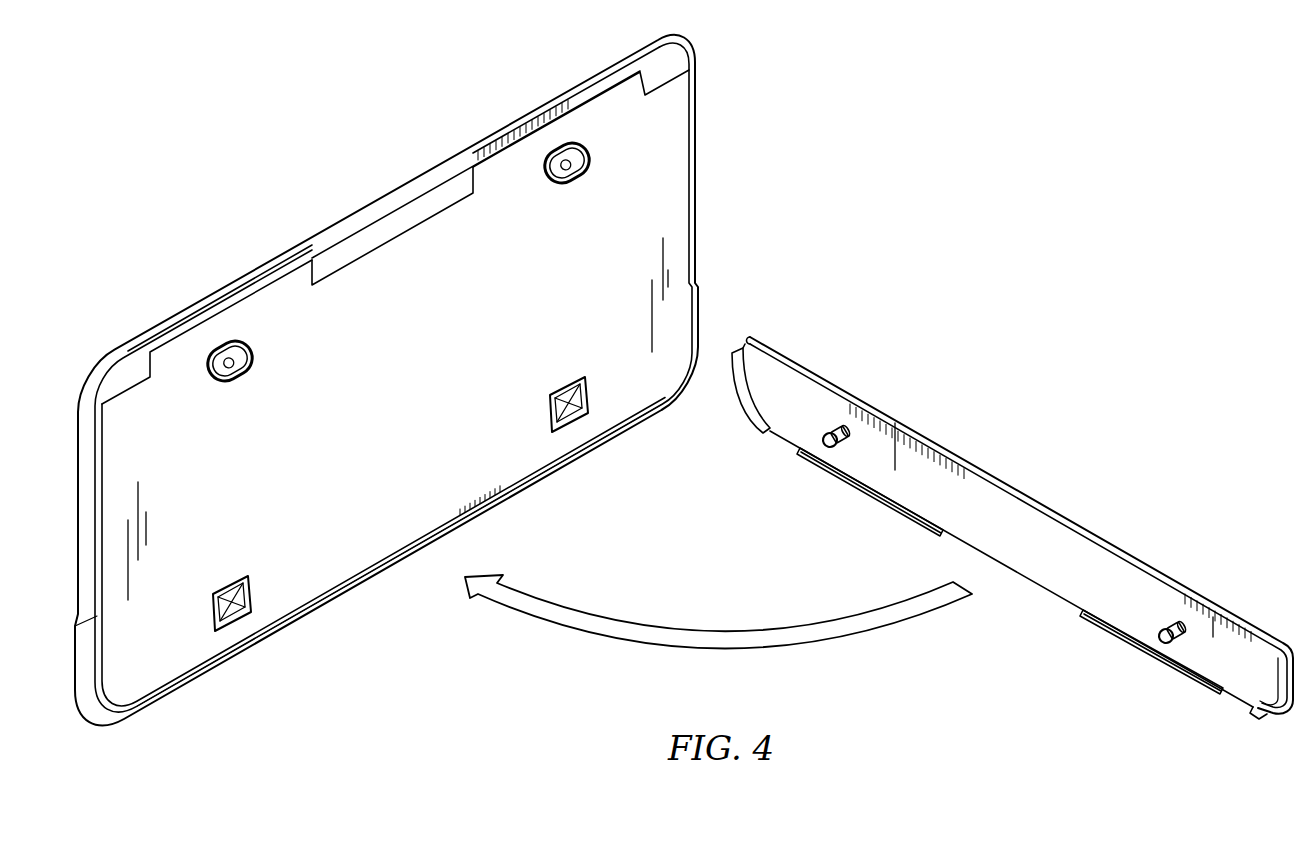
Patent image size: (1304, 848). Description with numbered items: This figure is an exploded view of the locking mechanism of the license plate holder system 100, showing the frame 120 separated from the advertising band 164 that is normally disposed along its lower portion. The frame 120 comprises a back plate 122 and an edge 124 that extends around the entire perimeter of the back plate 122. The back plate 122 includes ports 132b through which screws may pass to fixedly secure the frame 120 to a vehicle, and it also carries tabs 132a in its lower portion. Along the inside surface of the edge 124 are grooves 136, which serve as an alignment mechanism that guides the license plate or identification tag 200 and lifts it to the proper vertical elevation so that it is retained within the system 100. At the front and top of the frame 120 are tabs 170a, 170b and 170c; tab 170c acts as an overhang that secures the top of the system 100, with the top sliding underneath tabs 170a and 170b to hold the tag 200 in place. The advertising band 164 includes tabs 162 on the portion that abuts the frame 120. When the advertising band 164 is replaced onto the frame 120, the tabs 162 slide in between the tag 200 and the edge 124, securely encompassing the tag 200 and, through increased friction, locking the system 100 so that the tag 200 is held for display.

The license plate holder system 100 is at (745, 78).
The frame 120 is at (478, 141).
The back plate 122 is at (292, 312).
The edge 124 is at (208, 295).
The tabs 132a is at (588, 413).
The ports 132b is at (582, 180).
The grooves 136 is at (663, 408).
The tabs 162 is at (878, 502).
The advertising band 164 is at (990, 470).
The tab 170a is at (136, 380).
The tab 170b is at (667, 73).
The tab 170c is at (355, 250).
The license plate or identification tag 200 is at (676, 207).